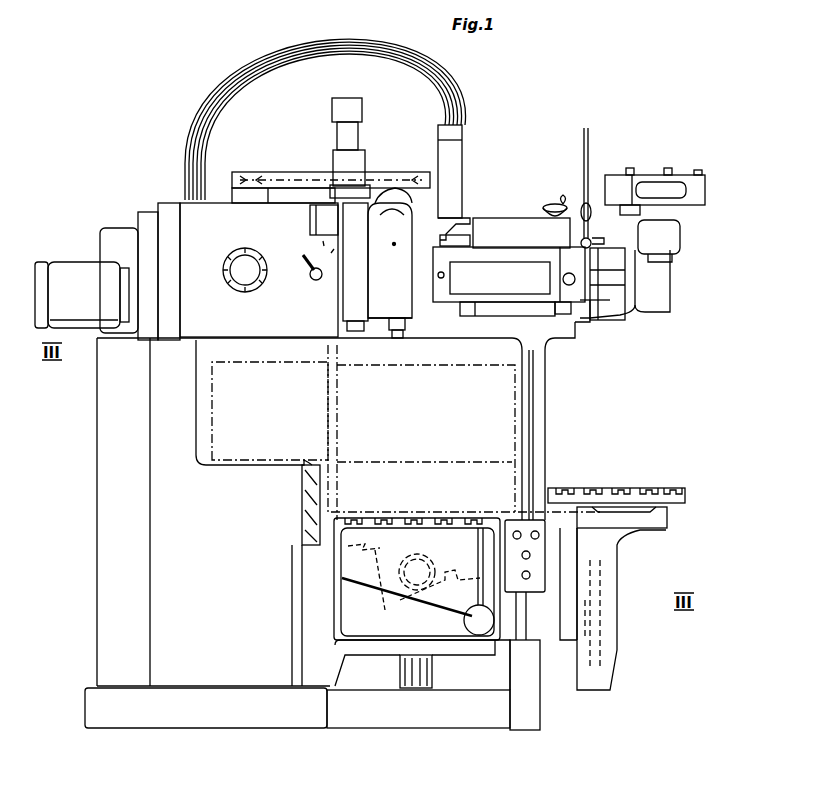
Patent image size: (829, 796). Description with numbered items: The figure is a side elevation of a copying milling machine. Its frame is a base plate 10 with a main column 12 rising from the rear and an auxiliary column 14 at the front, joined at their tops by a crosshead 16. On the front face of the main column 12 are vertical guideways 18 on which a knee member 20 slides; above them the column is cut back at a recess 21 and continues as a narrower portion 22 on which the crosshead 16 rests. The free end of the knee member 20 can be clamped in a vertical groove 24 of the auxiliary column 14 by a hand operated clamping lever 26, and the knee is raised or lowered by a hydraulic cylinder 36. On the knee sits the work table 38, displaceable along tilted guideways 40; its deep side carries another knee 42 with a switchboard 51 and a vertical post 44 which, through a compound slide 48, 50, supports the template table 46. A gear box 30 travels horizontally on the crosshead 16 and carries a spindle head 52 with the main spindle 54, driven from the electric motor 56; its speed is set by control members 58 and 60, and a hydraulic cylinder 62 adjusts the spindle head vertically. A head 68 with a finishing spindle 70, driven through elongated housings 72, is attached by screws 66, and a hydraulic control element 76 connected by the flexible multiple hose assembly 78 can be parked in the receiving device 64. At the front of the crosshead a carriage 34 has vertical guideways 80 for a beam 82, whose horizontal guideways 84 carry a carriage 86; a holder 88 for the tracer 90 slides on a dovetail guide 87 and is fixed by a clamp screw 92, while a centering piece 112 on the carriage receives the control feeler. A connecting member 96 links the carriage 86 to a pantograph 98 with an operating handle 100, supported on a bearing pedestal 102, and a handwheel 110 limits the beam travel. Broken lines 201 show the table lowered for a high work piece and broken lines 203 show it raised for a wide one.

The base plate 10 is at (230, 714).
The main column 12 is at (195, 560).
The auxiliary column 14 is at (541, 456).
The crosshead 16 is at (120, 232).
The vertical guideways 18 is at (320, 478).
The knee member 20 is at (390, 650).
The recess 21 is at (248, 468).
The narrower portion 22 is at (170, 380).
The vertical groove 24 is at (534, 404).
The clamping lever 26 is at (478, 546).
The gear box 30 is at (212, 205).
The carriage 34 is at (500, 316).
The hydraulic cylinder 36 is at (430, 680).
The work table 38 is at (394, 518).
The guideways 40 is at (425, 598).
The knee 42 is at (567, 625).
The post 44 is at (605, 626).
The template table 46 is at (660, 488).
The compound slide 48 is at (666, 530).
The compound slide 50 is at (668, 512).
The switchboard 51 is at (540, 572).
The spindle head 52 is at (346, 345).
The main spindle 54 is at (392, 330).
The electric motor 56 is at (75, 265).
The control member 58 is at (230, 250).
The control member 60 is at (304, 256).
The hydraulic cylinder 62 is at (345, 106).
The receiving device 64 is at (322, 215).
The screws 66 is at (393, 292).
The head 68 is at (404, 306).
The finishing spindle 70 is at (402, 330).
The elongated housings 72 is at (392, 186).
The hydraulic control element 76 is at (456, 218).
The flexible multiple hose assembly 78 is at (350, 40).
The vertical guideways 80 is at (580, 320).
The beam 82 is at (614, 305).
The horizontal guideways 84 is at (622, 290).
The carriage 86 is at (507, 248).
The dovetail guide 87 is at (460, 272).
The holder 88 is at (600, 302).
The tracer 90 is at (566, 314).
The clamp screw 92 is at (570, 273).
The connecting member 96 is at (675, 240).
The pantograph 98 is at (672, 182).
The operating handle 100 is at (581, 241).
The bearing pedestal 102 is at (668, 274).
The handwheel 110 is at (553, 203).
The centering piece 112 is at (470, 241).
The broken lines 201 is at (346, 400).
The broken lines 203 is at (270, 458).